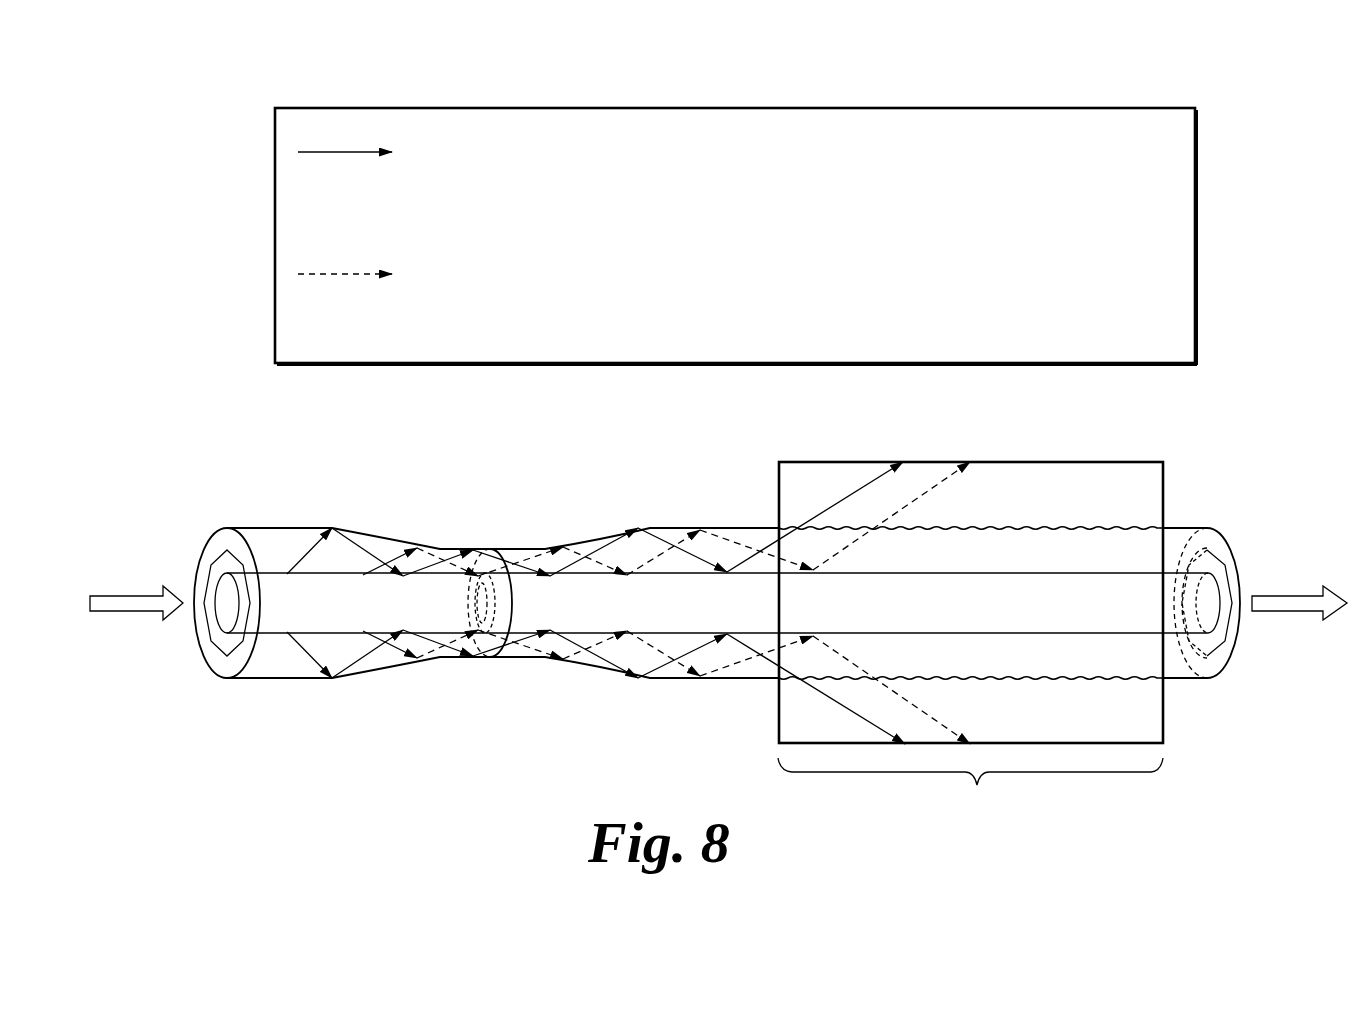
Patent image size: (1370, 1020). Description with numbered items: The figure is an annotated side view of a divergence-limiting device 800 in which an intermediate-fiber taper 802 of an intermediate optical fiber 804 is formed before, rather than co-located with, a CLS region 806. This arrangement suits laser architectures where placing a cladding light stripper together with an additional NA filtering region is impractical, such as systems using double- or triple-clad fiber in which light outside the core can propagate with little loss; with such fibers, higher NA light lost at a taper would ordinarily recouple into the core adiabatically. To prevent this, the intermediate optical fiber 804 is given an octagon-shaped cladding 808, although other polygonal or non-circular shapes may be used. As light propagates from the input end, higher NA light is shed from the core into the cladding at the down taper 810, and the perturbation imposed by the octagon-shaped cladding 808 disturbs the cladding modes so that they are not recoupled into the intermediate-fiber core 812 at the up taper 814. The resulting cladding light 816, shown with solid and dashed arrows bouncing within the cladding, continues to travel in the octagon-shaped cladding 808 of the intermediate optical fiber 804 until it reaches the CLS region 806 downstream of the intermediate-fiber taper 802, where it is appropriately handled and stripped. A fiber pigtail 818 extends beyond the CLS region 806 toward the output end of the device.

The divergence-limiting device 800 is at (720, 452).
The intermediate-fiber taper 802 is at (495, 537).
The intermediate optical fiber 804 is at (718, 606).
The CLS region 806 is at (960, 843).
The octagon-shaped cladding 808 is at (222, 569).
The down taper 810 is at (347, 573).
The intermediate-fiber core 812 is at (690, 598).
The up taper 814 is at (572, 575).
The cladding light 816 is at (609, 542).
The fiber pigtail 818 is at (1225, 538).